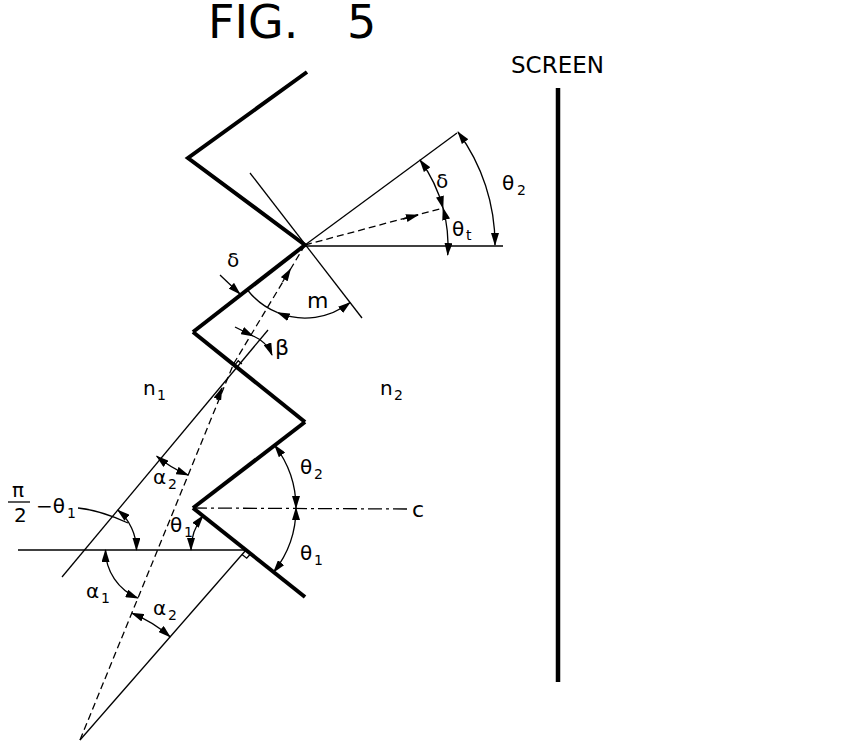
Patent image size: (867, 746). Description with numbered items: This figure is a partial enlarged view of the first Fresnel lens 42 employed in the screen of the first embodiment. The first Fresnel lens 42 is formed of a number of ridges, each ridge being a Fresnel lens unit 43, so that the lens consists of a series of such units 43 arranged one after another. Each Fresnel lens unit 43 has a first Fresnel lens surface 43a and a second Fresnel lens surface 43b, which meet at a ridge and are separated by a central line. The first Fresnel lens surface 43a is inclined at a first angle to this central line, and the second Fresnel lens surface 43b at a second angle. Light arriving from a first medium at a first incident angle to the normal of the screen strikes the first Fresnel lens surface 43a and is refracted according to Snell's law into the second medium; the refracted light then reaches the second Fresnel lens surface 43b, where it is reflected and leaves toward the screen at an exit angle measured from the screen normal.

The first Fresnel lens 42 is at (182, 137).
The Fresnel lens unit 43 is at (152, 221).
The first Fresnel lens surface 43a is at (197, 352).
The second Fresnel lens surface 43b is at (233, 299).